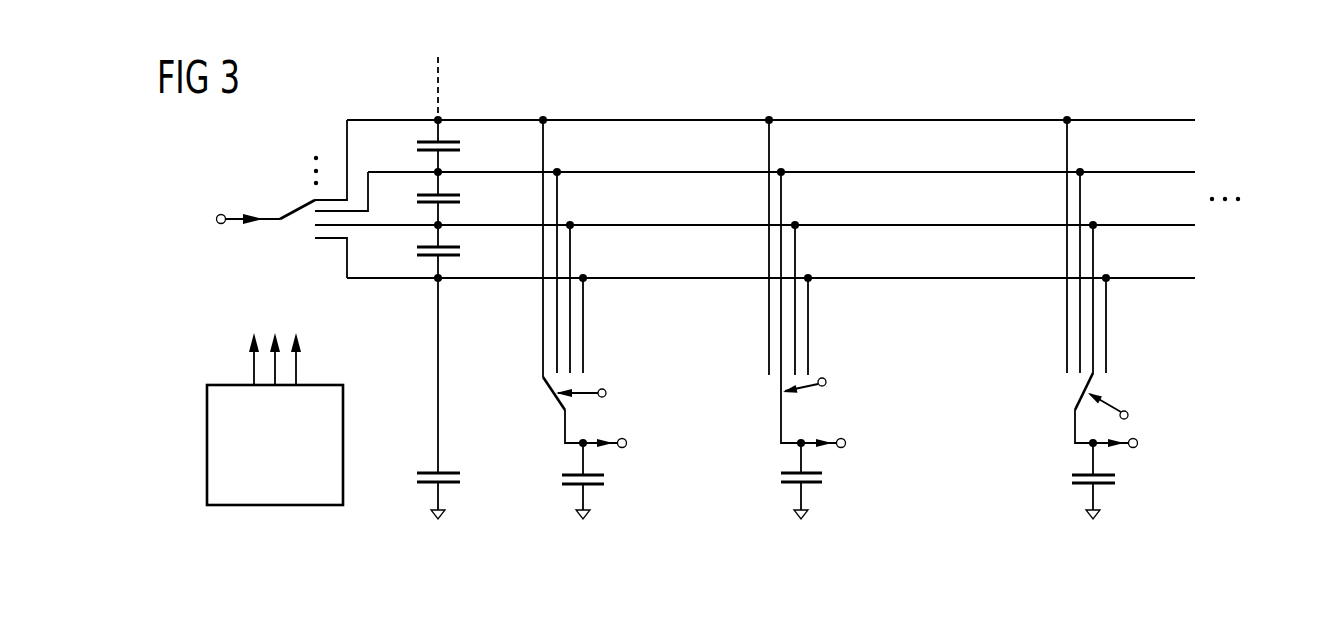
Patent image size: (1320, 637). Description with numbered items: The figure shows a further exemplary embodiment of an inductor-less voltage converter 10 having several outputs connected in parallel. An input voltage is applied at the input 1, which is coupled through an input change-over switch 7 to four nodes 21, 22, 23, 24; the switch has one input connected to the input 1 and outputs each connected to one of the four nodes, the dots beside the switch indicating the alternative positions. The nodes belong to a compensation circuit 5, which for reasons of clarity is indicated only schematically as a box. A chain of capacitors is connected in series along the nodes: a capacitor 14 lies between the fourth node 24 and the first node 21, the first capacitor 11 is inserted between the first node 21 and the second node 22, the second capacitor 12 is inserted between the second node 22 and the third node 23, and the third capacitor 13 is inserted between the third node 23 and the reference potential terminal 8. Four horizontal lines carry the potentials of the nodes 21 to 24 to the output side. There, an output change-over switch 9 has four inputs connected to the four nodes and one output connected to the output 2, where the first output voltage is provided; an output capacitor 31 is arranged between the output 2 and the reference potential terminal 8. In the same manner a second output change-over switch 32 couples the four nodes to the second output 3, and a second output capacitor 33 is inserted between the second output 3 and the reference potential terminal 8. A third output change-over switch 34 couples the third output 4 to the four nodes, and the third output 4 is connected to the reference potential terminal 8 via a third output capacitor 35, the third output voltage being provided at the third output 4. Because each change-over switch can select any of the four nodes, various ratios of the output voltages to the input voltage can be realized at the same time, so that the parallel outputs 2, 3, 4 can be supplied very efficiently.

The input 1 is at (222, 213).
The output 2 is at (622, 448).
The second output 3 is at (841, 448).
The third output 4 is at (1133, 448).
The compensation circuit 5 is at (207, 440).
The input change-over switch 7 is at (298, 206).
The reference potential terminal 8 is at (435, 521).
The output change-over switch 9 is at (546, 388).
The voltage converter 10 is at (1214, 122).
The first capacitor 11 is at (461, 200).
The second capacitor 12 is at (461, 252).
The third capacitor 13 is at (417, 479).
The capacitor 14 is at (461, 147).
The first node 21 is at (434, 170).
The second node 22 is at (434, 223).
The third node 23 is at (437, 280).
The fourth node 24 is at (440, 118).
The output capacitor 31 is at (562, 481).
The second output change-over switch 32 is at (780, 383).
The second output capacitor 33 is at (780, 478).
The third output change-over switch 34 is at (1079, 397).
The third output capacitor 35 is at (1072, 478).